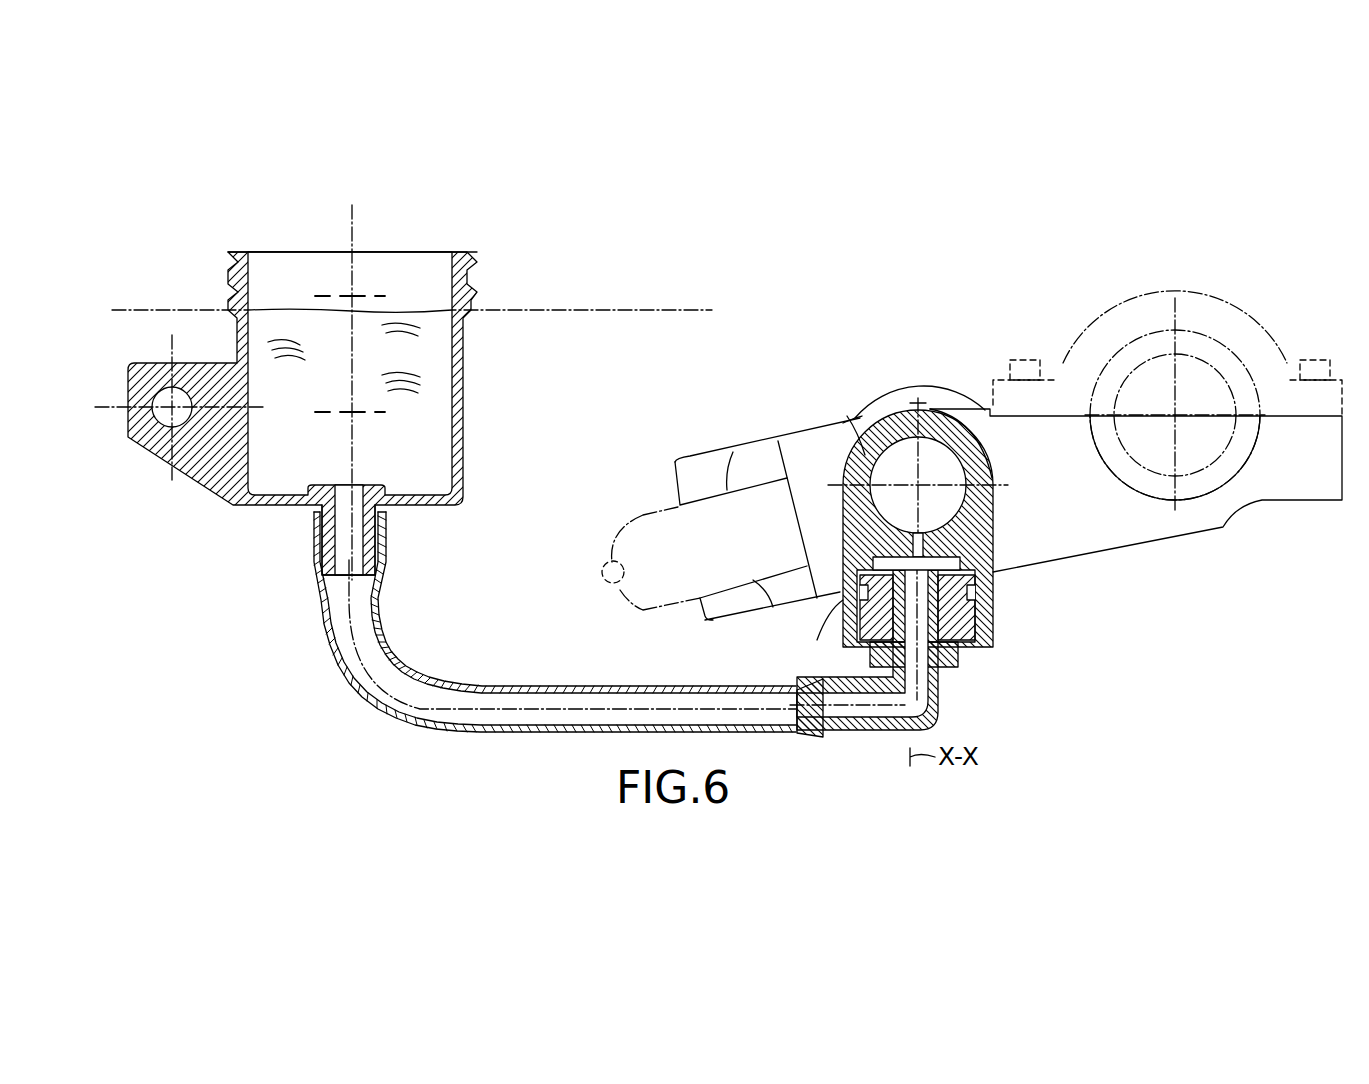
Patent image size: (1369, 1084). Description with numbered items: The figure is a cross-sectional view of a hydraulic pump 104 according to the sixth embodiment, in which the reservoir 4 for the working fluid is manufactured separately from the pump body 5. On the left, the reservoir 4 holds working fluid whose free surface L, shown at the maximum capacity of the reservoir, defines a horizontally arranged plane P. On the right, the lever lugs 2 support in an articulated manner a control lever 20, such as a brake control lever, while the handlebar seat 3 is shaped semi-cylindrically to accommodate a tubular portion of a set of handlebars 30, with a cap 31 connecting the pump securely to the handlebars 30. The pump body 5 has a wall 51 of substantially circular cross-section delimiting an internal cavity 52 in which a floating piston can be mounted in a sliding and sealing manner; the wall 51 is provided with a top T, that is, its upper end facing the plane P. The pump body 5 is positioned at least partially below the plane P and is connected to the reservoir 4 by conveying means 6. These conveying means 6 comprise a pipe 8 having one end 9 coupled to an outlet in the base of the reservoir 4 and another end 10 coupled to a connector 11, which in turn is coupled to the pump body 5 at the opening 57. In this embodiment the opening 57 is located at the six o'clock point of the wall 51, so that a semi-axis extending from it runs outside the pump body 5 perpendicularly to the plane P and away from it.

The hydraulic pump 104 is at (822, 316).
The lever lugs 2 is at (717, 515).
The control lever 20 is at (643, 517).
The handlebar seat 3 is at (1136, 421).
The set of handlebars 30 is at (1203, 473).
The cap 31 is at (1230, 322).
The reservoir 4 is at (463, 375).
The pump body 5 is at (953, 410).
The wall 51 is at (901, 567).
The internal cavity 52 is at (855, 428).
The opening 57 is at (870, 568).
The conveying means 6 is at (517, 622).
The pipe 8 is at (500, 690).
The end 9 is at (310, 513).
The end 10 is at (943, 663).
The connector 11 is at (990, 622).
The free surface L is at (393, 308).
The plane P is at (570, 310).
The top T is at (910, 403).